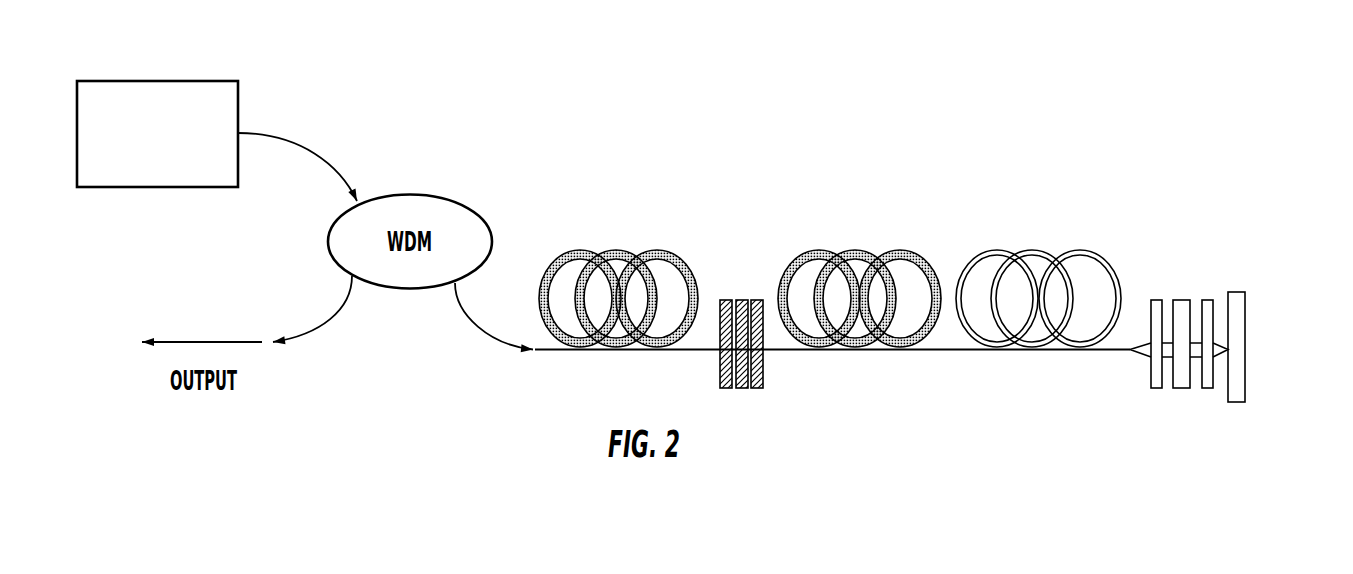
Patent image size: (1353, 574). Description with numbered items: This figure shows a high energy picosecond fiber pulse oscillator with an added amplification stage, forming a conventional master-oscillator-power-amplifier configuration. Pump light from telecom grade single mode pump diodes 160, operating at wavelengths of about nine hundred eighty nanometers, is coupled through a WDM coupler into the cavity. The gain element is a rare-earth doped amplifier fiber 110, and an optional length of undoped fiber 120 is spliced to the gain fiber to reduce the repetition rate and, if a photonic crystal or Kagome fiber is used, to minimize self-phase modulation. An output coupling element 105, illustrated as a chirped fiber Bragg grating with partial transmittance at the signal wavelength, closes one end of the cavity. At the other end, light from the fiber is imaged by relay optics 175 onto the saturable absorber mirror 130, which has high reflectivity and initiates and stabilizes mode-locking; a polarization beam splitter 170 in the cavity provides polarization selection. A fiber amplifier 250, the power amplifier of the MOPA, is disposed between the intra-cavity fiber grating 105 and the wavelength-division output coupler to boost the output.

The pump diodes 160 is at (152, 80).
The fiber amplifier 250 is at (618, 250).
The output coupling element 105 is at (740, 418).
The rare-earth doped amplifier fiber 110 is at (857, 250).
The undoped fiber 120 is at (1033, 250).
The relay optics 175 is at (1208, 300).
The polarization beam splitter 170 is at (1180, 388).
The saturable absorber mirror 130 is at (1245, 332).